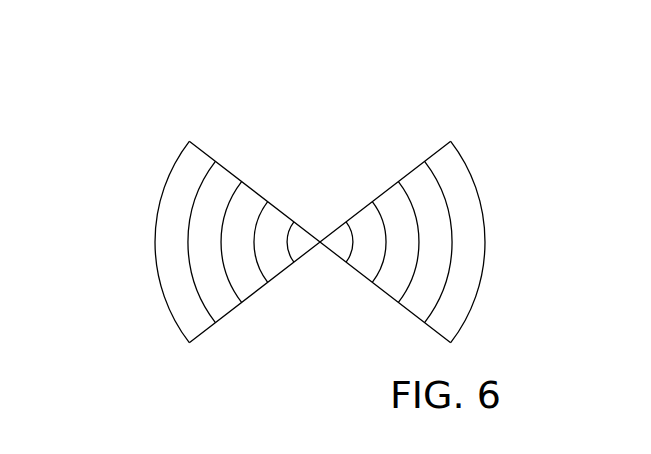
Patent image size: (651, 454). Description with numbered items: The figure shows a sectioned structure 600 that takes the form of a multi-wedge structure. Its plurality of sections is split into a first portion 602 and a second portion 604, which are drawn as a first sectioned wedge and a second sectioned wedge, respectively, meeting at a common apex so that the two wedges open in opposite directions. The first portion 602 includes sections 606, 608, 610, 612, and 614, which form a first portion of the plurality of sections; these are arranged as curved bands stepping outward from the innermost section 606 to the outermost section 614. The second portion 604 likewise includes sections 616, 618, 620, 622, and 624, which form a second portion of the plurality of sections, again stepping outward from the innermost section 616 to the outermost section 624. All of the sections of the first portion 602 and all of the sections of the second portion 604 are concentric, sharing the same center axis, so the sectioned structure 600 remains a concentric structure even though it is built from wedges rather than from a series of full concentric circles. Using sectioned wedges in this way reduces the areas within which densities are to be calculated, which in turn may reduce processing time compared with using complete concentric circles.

The sectioned structure 600 is at (237, 62).
The first portion 602 is at (262, 147).
The second portion 604 is at (380, 147).
The section 606 is at (298, 240).
The section 608 is at (277, 247).
The section 610 is at (244, 271).
The section 612 is at (212, 268).
The section 614 is at (188, 183).
The section 616 is at (342, 250).
The section 618 is at (368, 232).
The section 620 is at (400, 270).
The section 622 is at (427, 268).
The section 624 is at (463, 220).